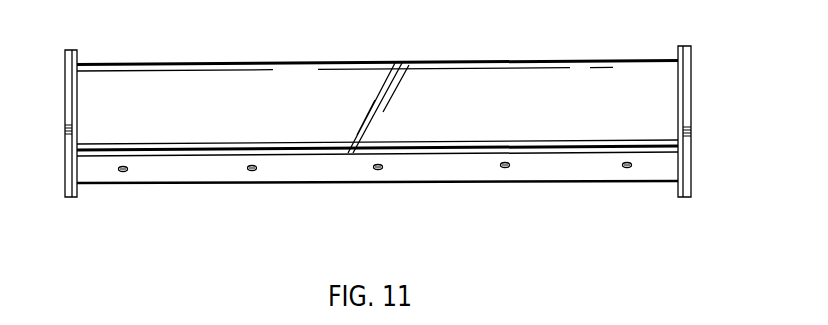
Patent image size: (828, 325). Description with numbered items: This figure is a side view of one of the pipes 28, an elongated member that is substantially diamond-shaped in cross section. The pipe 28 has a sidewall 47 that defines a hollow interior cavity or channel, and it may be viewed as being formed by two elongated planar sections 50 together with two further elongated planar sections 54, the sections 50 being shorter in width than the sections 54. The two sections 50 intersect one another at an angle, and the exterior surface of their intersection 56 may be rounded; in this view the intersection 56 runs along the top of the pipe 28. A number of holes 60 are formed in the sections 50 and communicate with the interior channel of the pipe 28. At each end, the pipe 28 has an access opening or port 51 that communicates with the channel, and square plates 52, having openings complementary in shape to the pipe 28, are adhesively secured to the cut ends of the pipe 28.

The pipe 28 is at (567, 125).
The sidewall 47 is at (175, 107).
The elongated planar section 50 is at (317, 170).
The access opening 51 is at (65, 97).
The square plate 52 is at (65, 170).
The elongated planar section 54 is at (321, 112).
The intersection 56 is at (365, 63).
The hole 60 is at (125, 172).